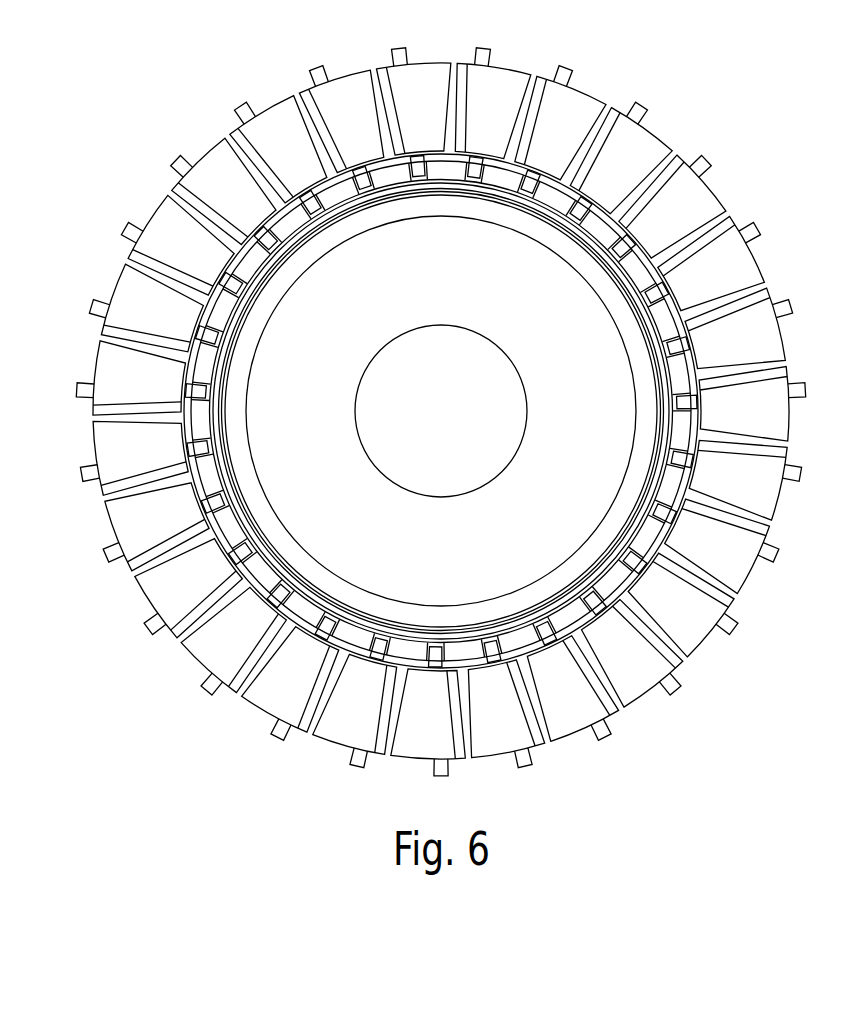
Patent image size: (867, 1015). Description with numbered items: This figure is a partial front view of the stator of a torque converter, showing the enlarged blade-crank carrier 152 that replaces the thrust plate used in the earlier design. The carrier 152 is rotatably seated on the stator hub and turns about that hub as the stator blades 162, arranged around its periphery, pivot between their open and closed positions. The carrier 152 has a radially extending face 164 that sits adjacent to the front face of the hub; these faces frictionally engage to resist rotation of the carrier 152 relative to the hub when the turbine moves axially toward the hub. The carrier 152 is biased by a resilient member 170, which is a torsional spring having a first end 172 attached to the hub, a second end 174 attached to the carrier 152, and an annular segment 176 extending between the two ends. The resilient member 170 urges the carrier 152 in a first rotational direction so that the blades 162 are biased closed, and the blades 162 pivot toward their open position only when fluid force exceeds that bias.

The blade-crank carrier 152 is at (340, 372).
The stator blades 162 is at (347, 92).
The radially extending face 164 is at (438, 265).
The resilient member 170 is at (212, 162).
The first end 172 is at (183, 425).
The second end 174 is at (187, 348).
The annular segment 176 is at (560, 190).